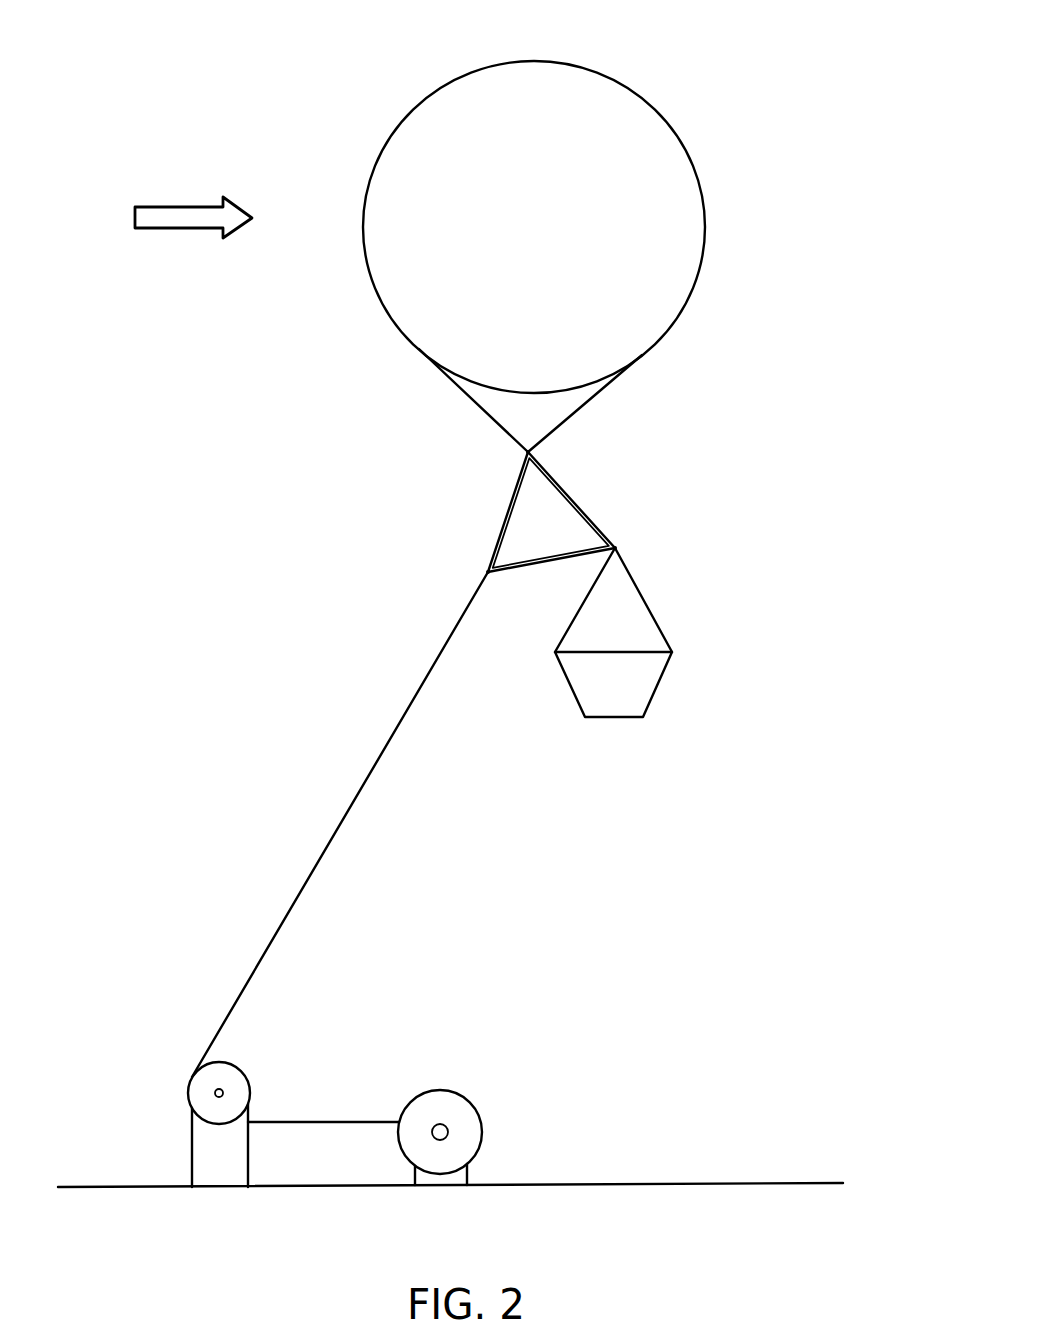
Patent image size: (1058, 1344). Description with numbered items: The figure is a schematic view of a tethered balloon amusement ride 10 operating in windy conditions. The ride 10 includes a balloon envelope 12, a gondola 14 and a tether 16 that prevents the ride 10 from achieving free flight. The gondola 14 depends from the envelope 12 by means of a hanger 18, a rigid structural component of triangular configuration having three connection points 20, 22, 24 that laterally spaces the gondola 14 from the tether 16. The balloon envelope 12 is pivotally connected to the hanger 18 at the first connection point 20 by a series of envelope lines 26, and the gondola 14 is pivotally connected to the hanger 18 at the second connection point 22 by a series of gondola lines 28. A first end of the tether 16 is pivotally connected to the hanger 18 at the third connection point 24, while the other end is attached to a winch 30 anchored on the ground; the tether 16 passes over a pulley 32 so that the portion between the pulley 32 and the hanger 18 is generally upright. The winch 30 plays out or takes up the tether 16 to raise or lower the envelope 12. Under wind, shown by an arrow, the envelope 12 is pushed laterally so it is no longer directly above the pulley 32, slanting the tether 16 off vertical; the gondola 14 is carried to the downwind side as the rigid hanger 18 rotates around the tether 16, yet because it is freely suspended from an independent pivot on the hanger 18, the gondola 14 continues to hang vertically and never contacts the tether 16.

The tethered balloon amusement ride 10 is at (817, 262).
The balloon envelope 12 is at (615, 78).
The gondola 14 is at (660, 685).
The tether 16 is at (318, 860).
The hanger 18 is at (574, 498).
The first connection point 20 is at (527, 452).
The second connection point 22 is at (617, 548).
The third connection point 24 is at (487, 571).
The envelope lines 26 is at (487, 415).
The gondola lines 28 is at (645, 601).
The winch 30 is at (450, 1090).
The pulley 32 is at (237, 1064).